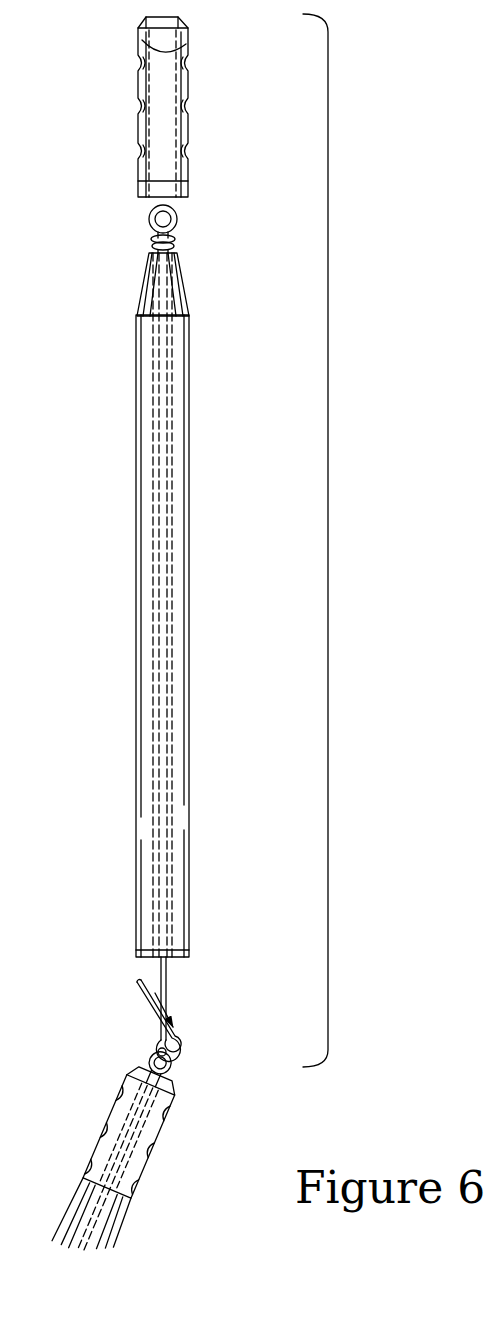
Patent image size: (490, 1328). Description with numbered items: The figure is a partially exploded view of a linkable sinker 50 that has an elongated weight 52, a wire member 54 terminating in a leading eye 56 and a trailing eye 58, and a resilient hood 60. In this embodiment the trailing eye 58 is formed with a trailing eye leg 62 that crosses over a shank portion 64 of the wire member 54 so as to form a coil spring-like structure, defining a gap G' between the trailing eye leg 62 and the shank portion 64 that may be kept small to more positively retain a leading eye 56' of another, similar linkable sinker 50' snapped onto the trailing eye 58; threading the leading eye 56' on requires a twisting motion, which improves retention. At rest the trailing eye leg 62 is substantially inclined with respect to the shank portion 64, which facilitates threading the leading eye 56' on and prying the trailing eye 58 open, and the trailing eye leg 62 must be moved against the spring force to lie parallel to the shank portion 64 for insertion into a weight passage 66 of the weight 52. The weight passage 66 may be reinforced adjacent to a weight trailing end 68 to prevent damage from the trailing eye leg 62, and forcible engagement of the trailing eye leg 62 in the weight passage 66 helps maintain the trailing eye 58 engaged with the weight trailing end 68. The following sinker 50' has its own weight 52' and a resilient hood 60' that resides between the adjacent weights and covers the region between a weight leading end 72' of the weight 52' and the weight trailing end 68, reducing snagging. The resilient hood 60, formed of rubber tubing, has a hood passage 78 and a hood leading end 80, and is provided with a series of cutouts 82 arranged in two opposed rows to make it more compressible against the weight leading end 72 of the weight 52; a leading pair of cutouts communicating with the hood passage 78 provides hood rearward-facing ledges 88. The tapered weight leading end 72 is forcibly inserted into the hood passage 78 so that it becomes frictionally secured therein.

The linkable sinker 50 is at (223, 638).
The elongated weight 52 is at (177, 605).
The wire member 54 is at (176, 243).
The leading eye 56 is at (198, 222).
The trailing eye 58 is at (148, 1047).
The resilient hood 60 is at (180, 121).
The trailing eye leg 62 is at (147, 1003).
The shank portion 64 is at (167, 972).
The weight passage 66 is at (172, 795).
The weight trailing end 68 is at (200, 942).
The weight leading end 72 is at (122, 284).
The hood passage 78 is at (146, 182).
The hood leading end 80 is at (143, 29).
The cutouts 82 is at (141, 153).
The hood rearward-facing ledges 88 is at (147, 46).
The gap G' is at (198, 1033).
The linkable sinker 50' is at (160, 1152).
The weight 52' is at (93, 1219).
The leading eye 56' is at (158, 1068).
The resilient hood 60' is at (122, 1153).
The weight leading end 72' is at (93, 1219).